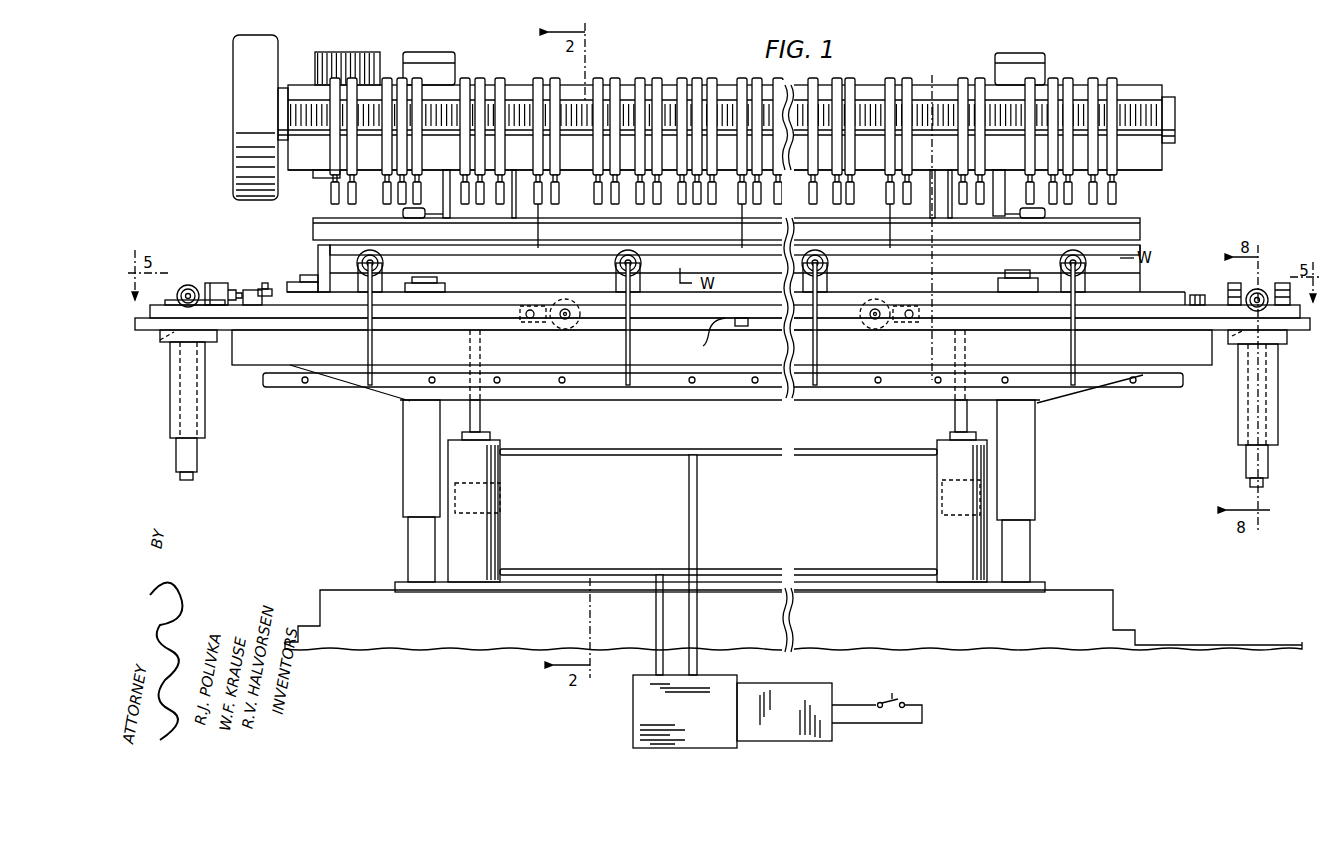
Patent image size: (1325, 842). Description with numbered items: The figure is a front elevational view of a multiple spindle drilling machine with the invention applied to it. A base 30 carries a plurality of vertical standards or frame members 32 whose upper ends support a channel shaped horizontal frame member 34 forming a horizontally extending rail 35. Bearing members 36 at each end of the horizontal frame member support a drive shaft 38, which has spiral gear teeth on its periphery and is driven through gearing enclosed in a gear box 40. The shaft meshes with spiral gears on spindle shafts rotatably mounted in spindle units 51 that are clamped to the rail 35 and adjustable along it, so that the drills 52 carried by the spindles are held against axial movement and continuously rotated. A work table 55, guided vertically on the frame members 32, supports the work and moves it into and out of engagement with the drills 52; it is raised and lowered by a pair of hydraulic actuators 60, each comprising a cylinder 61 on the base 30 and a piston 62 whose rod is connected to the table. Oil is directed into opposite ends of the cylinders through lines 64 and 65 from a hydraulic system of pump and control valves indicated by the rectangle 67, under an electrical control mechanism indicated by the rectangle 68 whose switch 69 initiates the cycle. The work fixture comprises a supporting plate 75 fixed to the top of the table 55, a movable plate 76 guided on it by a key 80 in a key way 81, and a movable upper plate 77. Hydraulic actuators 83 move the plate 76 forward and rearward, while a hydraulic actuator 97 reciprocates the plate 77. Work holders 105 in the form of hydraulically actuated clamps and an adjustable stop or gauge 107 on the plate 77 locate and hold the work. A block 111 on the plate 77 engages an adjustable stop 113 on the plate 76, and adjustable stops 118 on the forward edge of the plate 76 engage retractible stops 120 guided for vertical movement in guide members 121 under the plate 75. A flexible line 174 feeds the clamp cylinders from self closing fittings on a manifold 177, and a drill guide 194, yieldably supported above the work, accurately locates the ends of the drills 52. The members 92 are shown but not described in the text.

The base 30 is at (339, 592).
The vertical standards or frame members 32 is at (432, 56).
The horizontal frame member 34 is at (659, 85).
The rail 35 is at (1165, 154).
The bearing members 36 is at (284, 98).
The drive shaft 38 is at (290, 112).
The gear box 40 is at (245, 60).
The spindle units 51 is at (536, 78).
The drills 52 is at (540, 211).
The work table 55 is at (249, 365).
The hydraulic actuators 60 is at (512, 517).
The cylinder 61 is at (940, 520).
The piston 62 is at (500, 463).
The line 64 is at (627, 449).
The line 65 is at (622, 568).
The hydraulic system 67 is at (684, 740).
The electrical control mechanism 68 is at (790, 740).
The control element or switch 69 is at (908, 698).
The supporting plate 75 is at (149, 332).
The movable plate 76 is at (250, 295).
The movable upper plate 77 is at (294, 306).
The key 80 is at (742, 326).
The key way 81 is at (710, 340).
The hydraulic motors or actuators 83 is at (586, 302).
The hanger bars 92 is at (510, 211).
The hydraulic motor or actuator 97 is at (1228, 282).
The work holders 105 is at (392, 264).
The stop or gauge 107 is at (318, 254).
The block 111 is at (262, 289).
The adjustable stop 113 is at (216, 282).
The adjustable stops 118 is at (188, 285).
The retractible stops 120 is at (162, 344).
The guide members 121 is at (205, 422).
The flexible line 174 is at (372, 346).
The manifold 177 is at (336, 387).
The drill guide 194 is at (1150, 221).